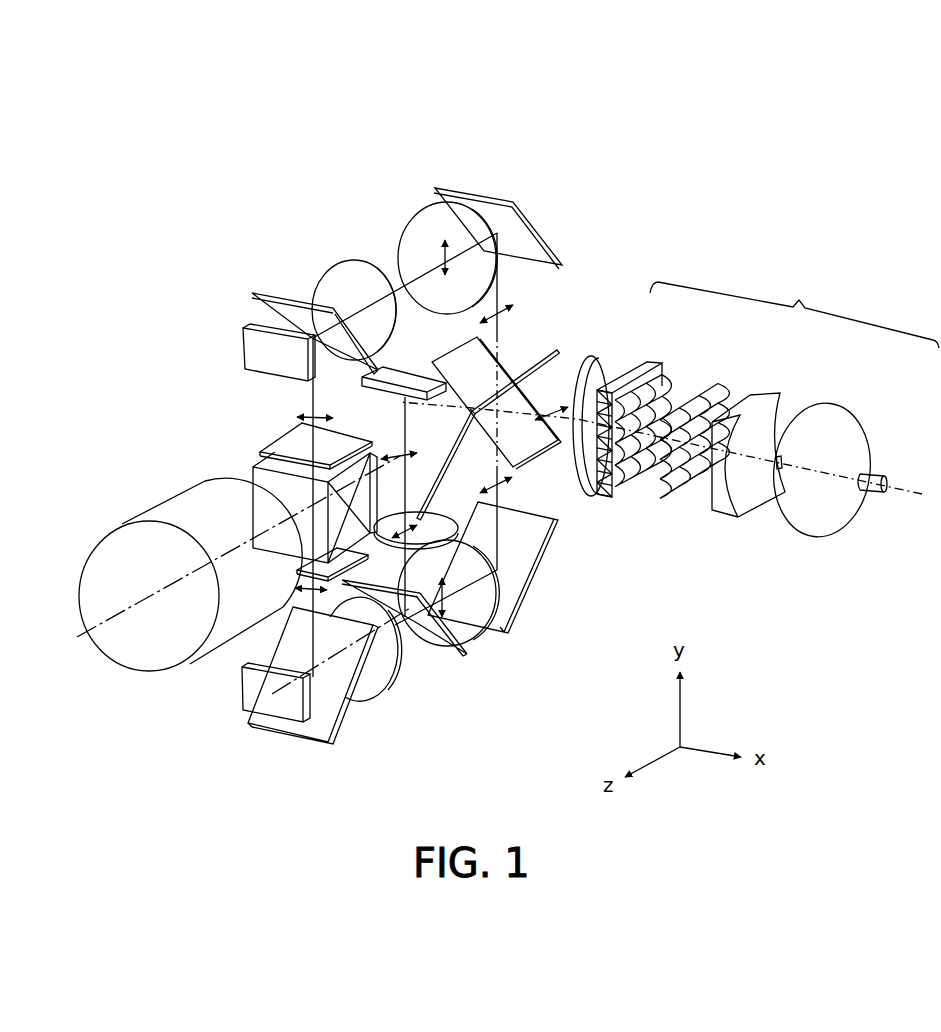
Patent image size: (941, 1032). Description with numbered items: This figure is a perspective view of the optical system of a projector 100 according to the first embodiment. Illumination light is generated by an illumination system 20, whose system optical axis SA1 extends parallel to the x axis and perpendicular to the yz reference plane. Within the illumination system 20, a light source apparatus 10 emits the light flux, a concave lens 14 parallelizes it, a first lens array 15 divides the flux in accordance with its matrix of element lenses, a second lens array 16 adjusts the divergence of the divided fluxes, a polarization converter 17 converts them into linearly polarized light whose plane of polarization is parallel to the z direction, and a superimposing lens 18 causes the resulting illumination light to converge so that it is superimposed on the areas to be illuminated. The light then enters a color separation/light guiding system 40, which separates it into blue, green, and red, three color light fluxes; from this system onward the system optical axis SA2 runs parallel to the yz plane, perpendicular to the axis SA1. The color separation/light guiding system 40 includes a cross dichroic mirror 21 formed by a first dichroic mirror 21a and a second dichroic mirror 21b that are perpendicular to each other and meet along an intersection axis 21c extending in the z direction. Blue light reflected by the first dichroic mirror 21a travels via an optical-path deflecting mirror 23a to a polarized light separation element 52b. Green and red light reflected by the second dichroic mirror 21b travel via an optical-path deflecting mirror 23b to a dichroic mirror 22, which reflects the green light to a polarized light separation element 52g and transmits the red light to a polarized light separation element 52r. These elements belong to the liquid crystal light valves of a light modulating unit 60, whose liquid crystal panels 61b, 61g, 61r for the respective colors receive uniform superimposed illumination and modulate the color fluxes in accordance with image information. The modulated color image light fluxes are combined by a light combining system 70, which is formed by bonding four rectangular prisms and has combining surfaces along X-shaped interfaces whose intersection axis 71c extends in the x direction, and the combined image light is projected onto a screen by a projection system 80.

The projector 100 is at (845, 179).
The light source apparatus 10 is at (847, 413).
The concave lens 14 is at (777, 397).
The first lens array 15 is at (712, 420).
The second lens array 16 is at (712, 386).
The polarization converter 17 is at (680, 372).
The superimposing lens 18 is at (637, 360).
The illumination system 20 is at (794, 313).
The cross dichroic mirror 21 is at (522, 333).
The first dichroic mirror 21a is at (576, 478).
The second dichroic mirror 21b is at (533, 346).
The intersection axis 21c is at (557, 356).
The dichroic mirror 22 is at (468, 656).
The optical-path deflecting mirror 23a is at (532, 220).
The optical-path deflecting mirror 23b is at (524, 614).
The color separation/light guiding system 40 is at (386, 208).
The polarized light separation element 52b is at (277, 297).
The polarized light separation element 52g is at (432, 475).
The polarized light separation element 52r is at (315, 745).
The light modulating unit 60 is at (230, 330).
The liquid crystal panel 61b is at (253, 356).
The liquid crystal panel 61g is at (380, 365).
The liquid crystal panel 61r is at (255, 695).
The light combining system 70 is at (255, 465).
The intersection axis 71c is at (290, 484).
The projection system 80 is at (157, 502).
The system optical axis SA1 is at (770, 462).
The system optical axis SA2 is at (391, 270).